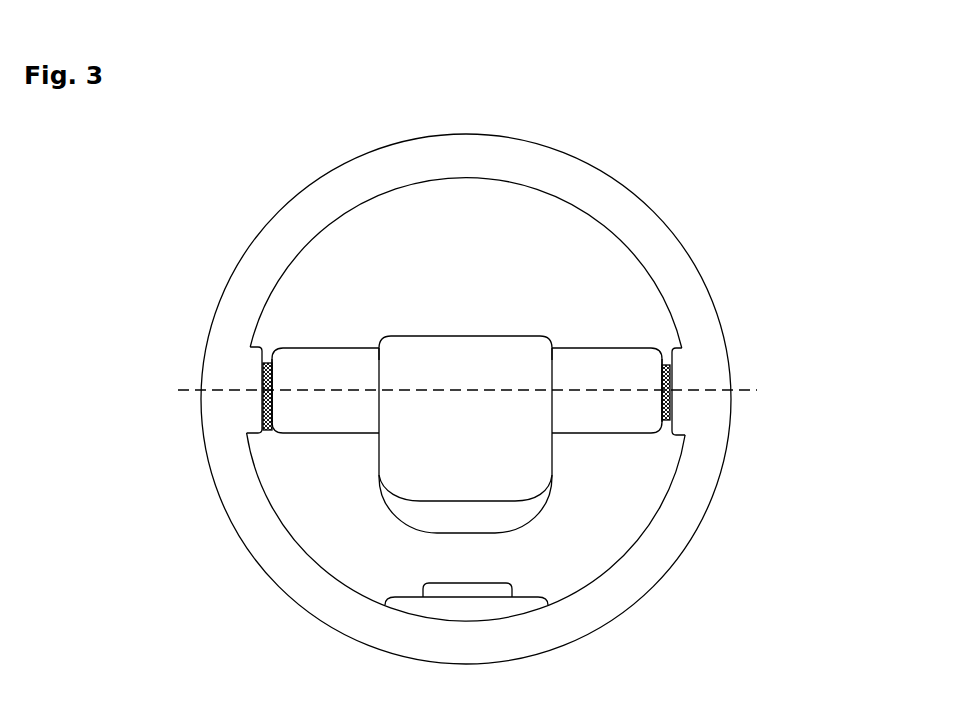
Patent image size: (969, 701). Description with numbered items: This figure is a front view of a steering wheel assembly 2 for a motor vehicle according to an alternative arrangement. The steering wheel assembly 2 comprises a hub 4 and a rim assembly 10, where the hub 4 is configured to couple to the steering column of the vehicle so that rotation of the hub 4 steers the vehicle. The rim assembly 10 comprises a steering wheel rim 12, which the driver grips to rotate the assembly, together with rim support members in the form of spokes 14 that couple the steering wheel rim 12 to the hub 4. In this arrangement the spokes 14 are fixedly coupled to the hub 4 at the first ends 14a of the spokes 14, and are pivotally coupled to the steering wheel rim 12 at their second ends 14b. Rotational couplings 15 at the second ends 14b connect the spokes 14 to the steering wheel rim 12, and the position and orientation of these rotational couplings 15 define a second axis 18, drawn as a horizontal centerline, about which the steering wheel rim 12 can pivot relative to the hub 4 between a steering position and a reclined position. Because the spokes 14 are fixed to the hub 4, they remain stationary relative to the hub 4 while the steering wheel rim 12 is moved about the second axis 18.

The steering wheel assembly 2 is at (610, 121).
The rim assembly 10 is at (668, 160).
The steering wheel rim 12 is at (657, 218).
The spokes 14 is at (332, 424).
The first ends of the spokes 14a is at (374, 368).
The spoke outer end 14b is at (277, 362).
The rotational couplings 15 is at (267, 395).
The second axis 18 is at (178, 388).
The hub 4 is at (450, 350).